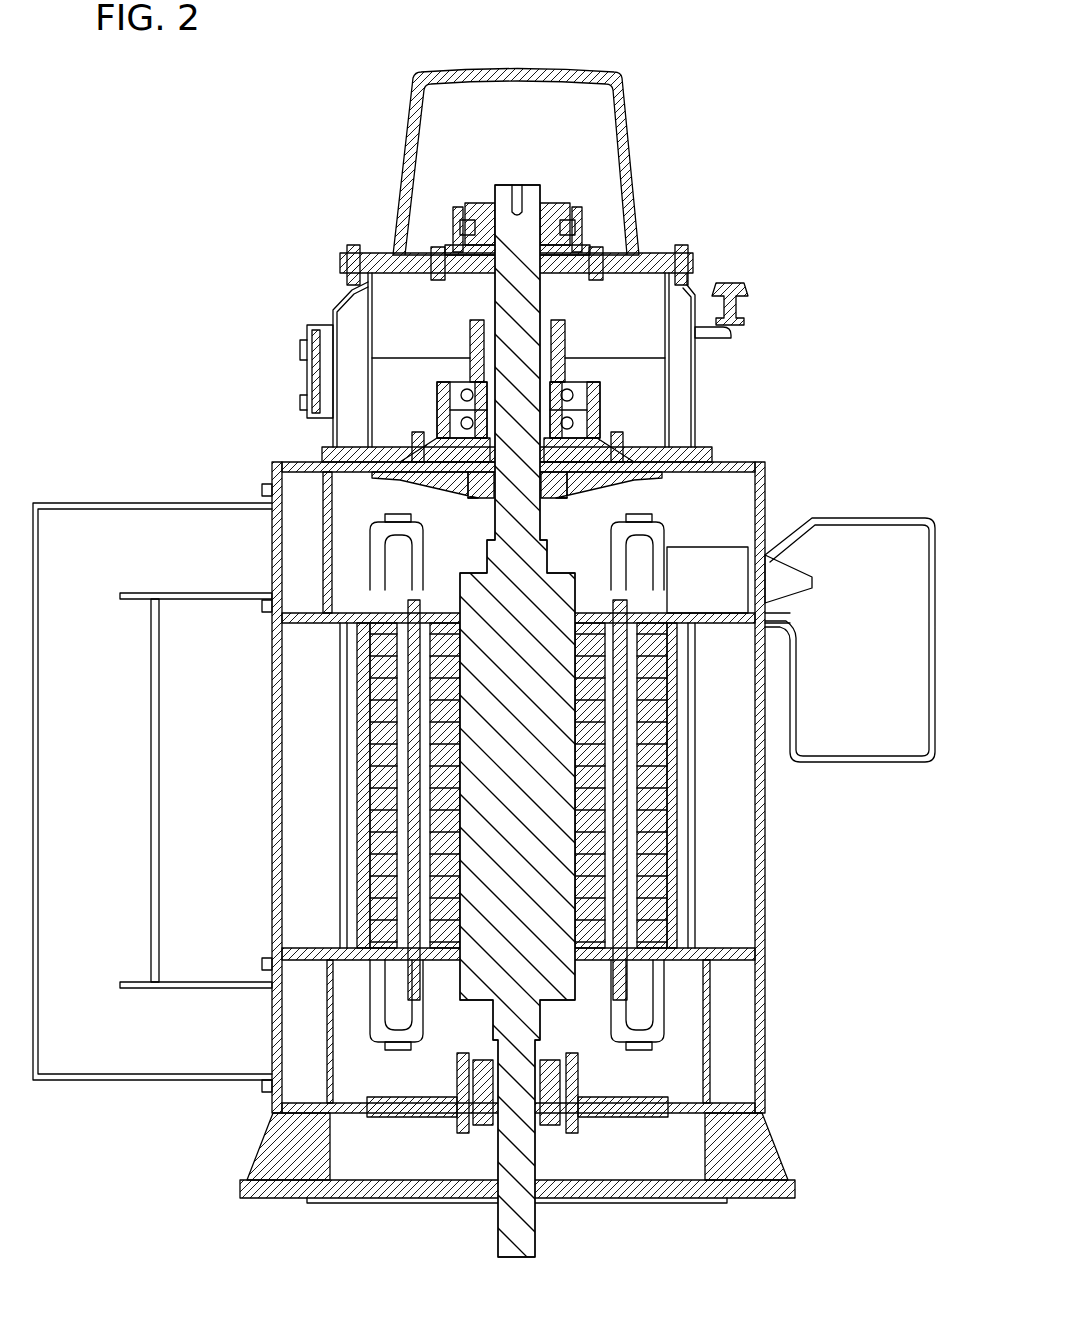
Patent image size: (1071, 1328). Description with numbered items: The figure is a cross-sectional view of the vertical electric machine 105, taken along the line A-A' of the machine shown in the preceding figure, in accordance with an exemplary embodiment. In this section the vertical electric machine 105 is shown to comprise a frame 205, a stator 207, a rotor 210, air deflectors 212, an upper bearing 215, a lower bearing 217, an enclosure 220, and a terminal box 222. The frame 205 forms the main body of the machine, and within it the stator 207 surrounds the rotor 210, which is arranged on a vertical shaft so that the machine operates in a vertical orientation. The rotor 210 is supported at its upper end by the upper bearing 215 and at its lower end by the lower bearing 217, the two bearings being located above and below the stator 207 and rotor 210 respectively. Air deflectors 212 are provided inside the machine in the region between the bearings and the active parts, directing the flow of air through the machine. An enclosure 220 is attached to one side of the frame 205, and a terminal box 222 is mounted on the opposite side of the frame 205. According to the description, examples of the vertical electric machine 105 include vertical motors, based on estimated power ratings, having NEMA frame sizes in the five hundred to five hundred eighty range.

The vertical electric machine 105 is at (757, 72).
The frame 205 is at (750, 462).
The stator 207 is at (625, 812).
The rotor 210 is at (510, 862).
The air deflectors 212 is at (585, 525).
The upper bearing 215 is at (625, 330).
The lower bearing 217 is at (610, 1118).
The enclosure 220 is at (141, 1049).
The terminal box 222 is at (870, 518).